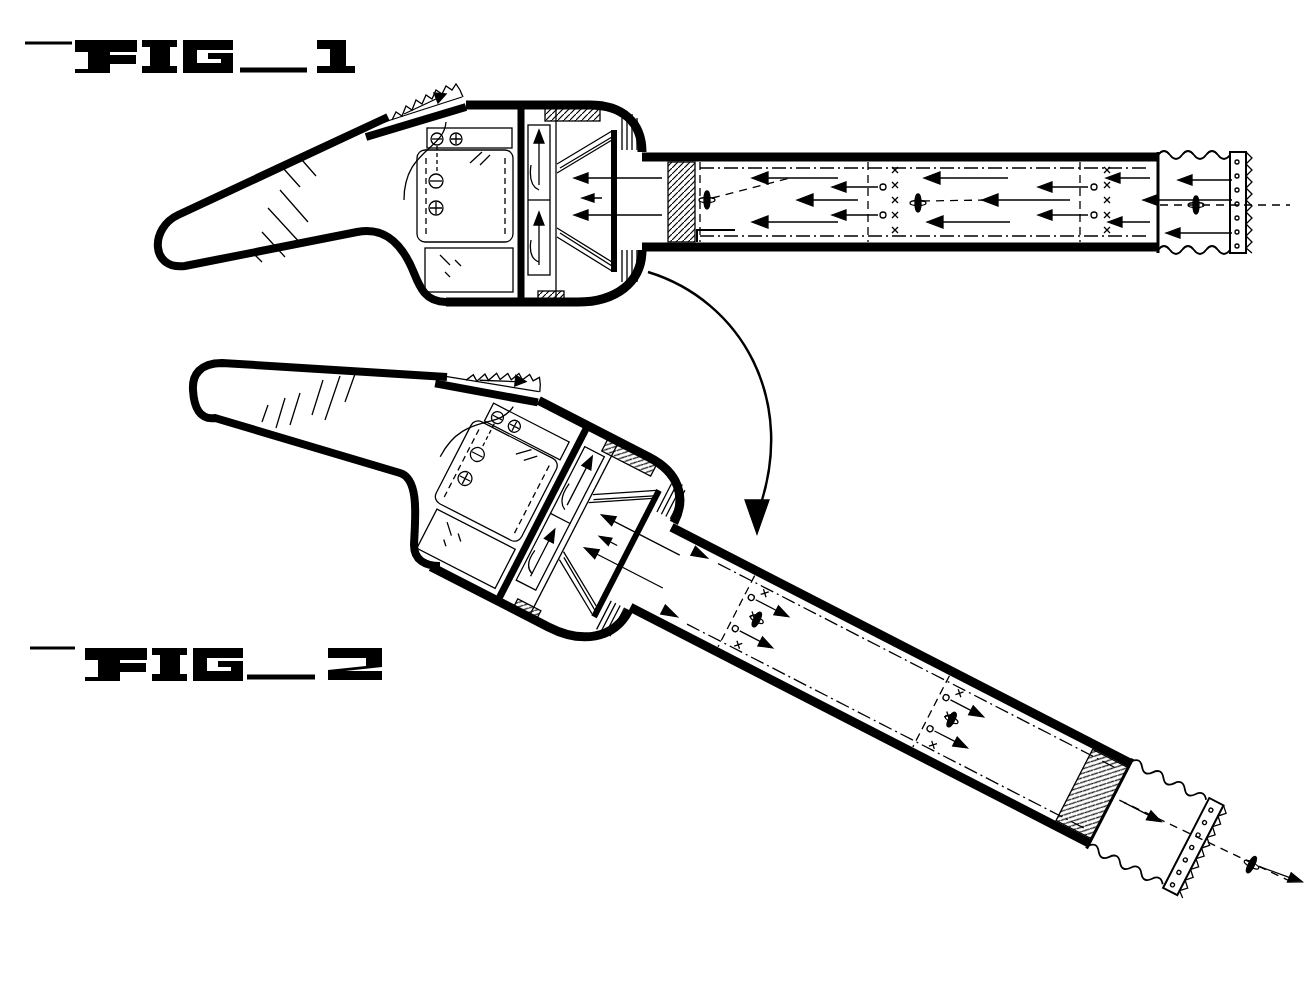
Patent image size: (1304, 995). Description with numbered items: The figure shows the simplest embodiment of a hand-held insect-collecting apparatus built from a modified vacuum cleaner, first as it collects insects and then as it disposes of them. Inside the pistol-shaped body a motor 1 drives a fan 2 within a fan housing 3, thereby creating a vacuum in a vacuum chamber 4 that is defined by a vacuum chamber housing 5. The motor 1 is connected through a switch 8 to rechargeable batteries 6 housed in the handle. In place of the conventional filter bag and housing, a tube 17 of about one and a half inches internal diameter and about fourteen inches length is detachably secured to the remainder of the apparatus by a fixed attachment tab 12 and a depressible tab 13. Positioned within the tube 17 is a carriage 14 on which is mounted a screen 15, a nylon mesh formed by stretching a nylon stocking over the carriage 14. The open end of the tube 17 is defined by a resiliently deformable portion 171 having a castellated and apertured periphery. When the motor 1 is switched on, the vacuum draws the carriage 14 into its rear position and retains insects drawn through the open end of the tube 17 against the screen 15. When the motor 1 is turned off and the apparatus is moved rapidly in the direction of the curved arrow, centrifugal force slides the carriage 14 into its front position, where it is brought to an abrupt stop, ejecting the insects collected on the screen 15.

In FIG. 1, the motor 1 is at (483, 218).
In FIG. 2, the motor 1 is at (501, 507).
In FIG. 1, the fan 2 is at (540, 295).
In FIG. 2, the fan 2 is at (500, 610).
In FIG. 1, the fan housing 3 is at (575, 268).
In FIG. 2, the fan housing 3 is at (555, 600).
In FIG. 1, the vacuum chamber 4 is at (579, 201).
In FIG. 2, the vacuum chamber 4 is at (602, 543).
In FIG. 1, the vacuum chamber housing 5 is at (580, 150).
In FIG. 2, the vacuum chamber housing 5 is at (623, 490).
In FIG. 1, the rechargeable batteries 6 is at (490, 280).
In FIG. 2, the rechargeable batteries 6 is at (486, 565).
In FIG. 1, the switch 8 is at (433, 97).
In FIG. 2, the switch 8 is at (457, 363).
In FIG. 1, the fixed attachment tab 12 is at (552, 302).
In FIG. 2, the fixed attachment tab 12 is at (522, 613).
In FIG. 1, the depressible tab 13 is at (568, 102).
In FIG. 2, the depressible tab 13 is at (620, 438).
In FIG. 1, the carriage 14 is at (683, 247).
In FIG. 2, the carriage 14 is at (1067, 793).
In FIG. 1, the screen 15 is at (700, 232).
In FIG. 2, the screen 15 is at (1117, 840).
In FIG. 1, the tube 17 is at (940, 255).
In FIG. 2, the tube 17 is at (812, 713).
In FIG. 1, the resiliently deformable portion 171 is at (1178, 153).
In FIG. 2, the resiliently deformable portion 171 is at (1170, 783).